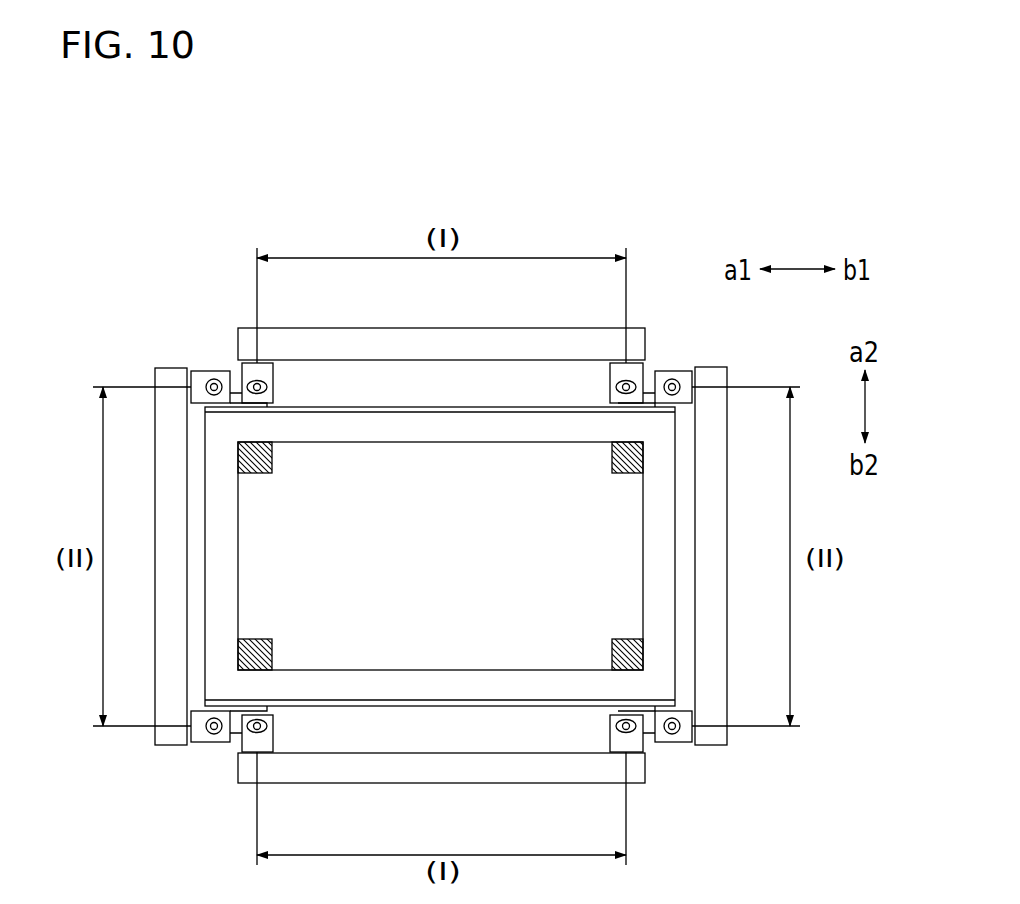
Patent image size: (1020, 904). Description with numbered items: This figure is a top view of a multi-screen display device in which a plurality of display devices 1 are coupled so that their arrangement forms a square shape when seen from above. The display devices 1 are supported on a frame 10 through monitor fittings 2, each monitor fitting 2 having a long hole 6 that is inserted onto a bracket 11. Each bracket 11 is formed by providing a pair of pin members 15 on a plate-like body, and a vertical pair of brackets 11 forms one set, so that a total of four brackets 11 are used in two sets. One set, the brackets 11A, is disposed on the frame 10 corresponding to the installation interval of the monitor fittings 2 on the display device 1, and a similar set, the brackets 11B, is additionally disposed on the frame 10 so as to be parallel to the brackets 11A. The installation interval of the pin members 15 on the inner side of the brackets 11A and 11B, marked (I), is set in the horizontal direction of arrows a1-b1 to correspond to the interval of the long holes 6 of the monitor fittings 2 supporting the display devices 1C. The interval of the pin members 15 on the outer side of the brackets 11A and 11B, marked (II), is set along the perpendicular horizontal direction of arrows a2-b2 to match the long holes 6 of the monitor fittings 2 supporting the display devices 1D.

The display device 1 is at (440, 557).
The display device 1C is at (420, 345).
The display device 1D is at (712, 372).
The monitor fitting 2 is at (202, 374).
The long hole 6 is at (257, 387).
The frame 10 is at (412, 430).
The bracket 11 is at (440, 558).
The bracket 11A is at (430, 402).
The bracket 11B is at (430, 746).
The pin member 15 is at (210, 392).